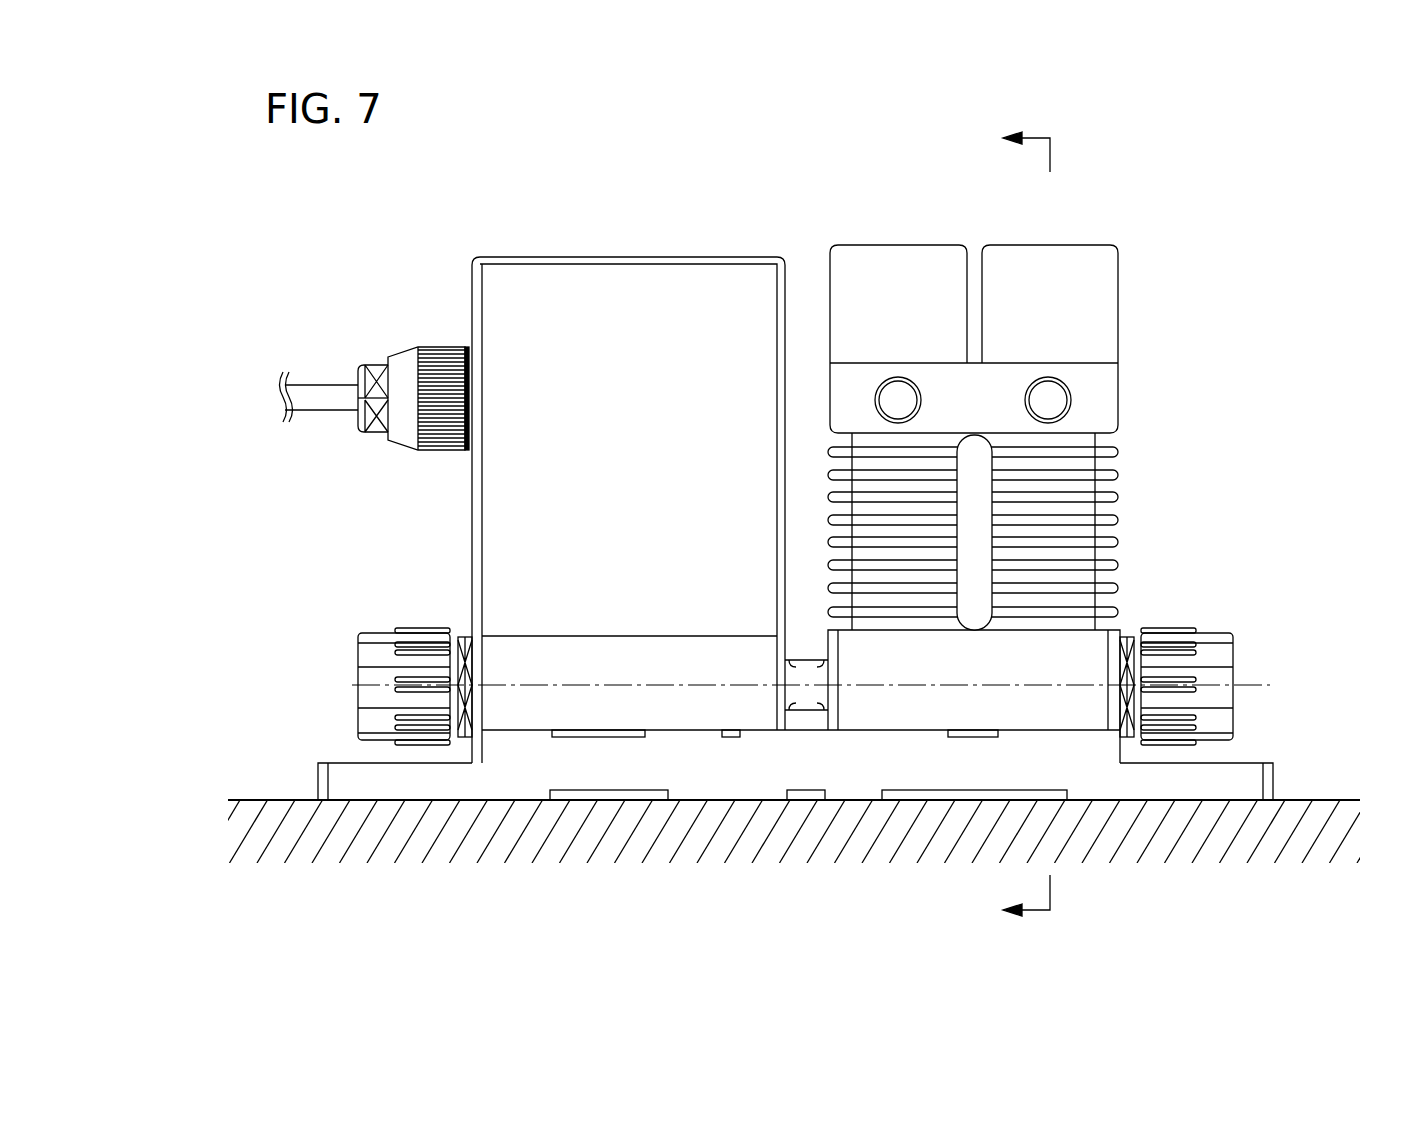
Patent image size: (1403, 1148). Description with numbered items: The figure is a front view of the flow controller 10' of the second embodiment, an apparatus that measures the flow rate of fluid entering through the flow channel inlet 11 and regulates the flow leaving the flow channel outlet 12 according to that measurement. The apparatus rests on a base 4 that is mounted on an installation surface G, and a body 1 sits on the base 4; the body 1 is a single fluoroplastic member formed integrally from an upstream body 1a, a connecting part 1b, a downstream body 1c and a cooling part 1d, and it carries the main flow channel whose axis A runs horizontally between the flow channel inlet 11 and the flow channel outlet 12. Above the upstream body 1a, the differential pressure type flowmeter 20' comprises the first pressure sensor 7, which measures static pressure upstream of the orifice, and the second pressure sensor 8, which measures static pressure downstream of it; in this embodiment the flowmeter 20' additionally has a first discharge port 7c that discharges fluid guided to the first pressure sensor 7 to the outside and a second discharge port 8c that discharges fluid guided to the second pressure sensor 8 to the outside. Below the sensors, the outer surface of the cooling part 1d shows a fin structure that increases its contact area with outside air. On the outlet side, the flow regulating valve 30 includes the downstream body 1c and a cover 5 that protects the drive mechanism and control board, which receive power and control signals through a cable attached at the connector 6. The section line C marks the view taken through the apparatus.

The flow controller 10' is at (852, 410).
The flow regulating valve 30 is at (787, 218).
The differential pressure type flowmeter 20' is at (972, 301).
The cover 5 is at (492, 278).
The connector 6 is at (400, 350).
The second pressure sensor 8 is at (853, 273).
The first pressure sensor 7 is at (1102, 272).
The second discharge port 8c is at (898, 398).
The first discharge port 7c is at (1055, 402).
The cooling part 1d is at (1148, 476).
The body 1 is at (1080, 645).
The upstream body 1a is at (912, 705).
The connecting part 1b is at (808, 695).
The downstream body 1c is at (515, 705).
The base 4 is at (990, 765).
The flow channel inlet 11 is at (1213, 630).
The flow channel outlet 12 is at (380, 630).
The installation surface G is at (798, 831).
The axis A is at (823, 686).
The section line C is at (1039, 526).